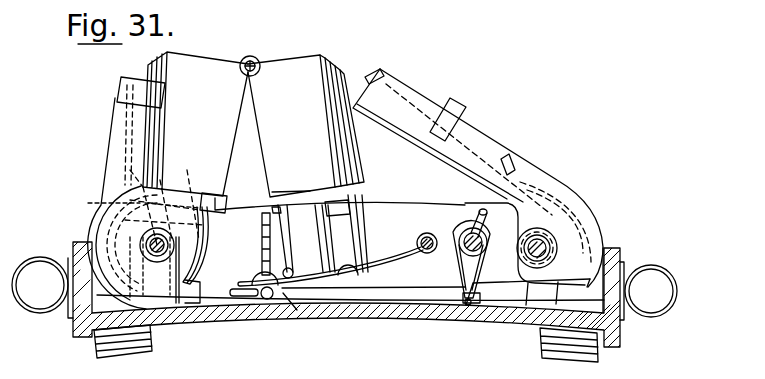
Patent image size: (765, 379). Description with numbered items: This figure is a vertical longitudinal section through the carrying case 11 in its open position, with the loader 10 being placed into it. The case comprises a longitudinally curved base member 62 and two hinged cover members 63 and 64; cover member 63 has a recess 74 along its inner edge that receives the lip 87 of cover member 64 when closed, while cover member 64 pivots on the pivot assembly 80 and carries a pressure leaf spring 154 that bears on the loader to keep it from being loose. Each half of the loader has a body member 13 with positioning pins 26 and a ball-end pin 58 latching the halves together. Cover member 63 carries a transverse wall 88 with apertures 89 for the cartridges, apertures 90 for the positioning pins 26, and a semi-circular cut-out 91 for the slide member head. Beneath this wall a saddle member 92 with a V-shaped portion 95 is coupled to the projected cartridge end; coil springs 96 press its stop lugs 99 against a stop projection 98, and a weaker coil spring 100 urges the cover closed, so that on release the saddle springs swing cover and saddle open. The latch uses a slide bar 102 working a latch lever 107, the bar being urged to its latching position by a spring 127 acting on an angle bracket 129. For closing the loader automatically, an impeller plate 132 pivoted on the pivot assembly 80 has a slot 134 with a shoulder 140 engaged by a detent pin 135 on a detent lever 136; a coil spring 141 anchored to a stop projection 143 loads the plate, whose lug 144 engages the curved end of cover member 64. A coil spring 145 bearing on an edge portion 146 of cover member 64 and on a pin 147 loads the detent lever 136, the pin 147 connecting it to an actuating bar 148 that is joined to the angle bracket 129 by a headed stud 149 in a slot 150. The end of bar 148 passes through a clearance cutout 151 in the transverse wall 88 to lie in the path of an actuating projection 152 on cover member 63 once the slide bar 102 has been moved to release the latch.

The loader 10 is at (233, 48).
The carrying case 11 is at (47, 342).
The semi-cylindrical body member 13 is at (270, 143).
The positioning pins 26 is at (182, 173).
The ball-end pin 58 is at (265, 176).
The base member 62 is at (333, 315).
The cover member 63 is at (86, 157).
The cover member 64 is at (503, 123).
The recess 74 is at (118, 80).
The pivot assembly 80 is at (565, 233).
The lip 87 is at (368, 75).
The transverse wall 88 is at (150, 186).
The apertures 89 is at (162, 183).
The apertures 90 is at (183, 187).
The semi-circular cut-out 91 is at (207, 192).
The saddle member 92 is at (92, 232).
The V-shaped portion 95 is at (212, 228).
The coil springs 96 is at (200, 270).
The stop projection 98 is at (193, 303).
The stop lugs 99 is at (197, 328).
The coil spring 100 is at (122, 298).
The slide bar 102 is at (270, 300).
The latch lever 107 is at (253, 242).
The spring 127 is at (400, 254).
The angle bracket 129 is at (287, 262).
The impeller plate 132 is at (518, 320).
The slot 134 is at (465, 205).
The detent pin 135 is at (455, 262).
The detent lever 136 is at (482, 263).
The shoulder 140 is at (454, 233).
The coil spring 141 is at (561, 296).
The stop projection 143 is at (615, 317).
The lug 144 is at (645, 286).
The coil spring 145 is at (455, 276).
The edge portion 146 is at (528, 294).
The pin 147 is at (452, 313).
The actuating bar 148 is at (354, 297).
The headed stud 149 is at (286, 303).
The slot 150 is at (243, 300).
The clearance cutout 151 is at (222, 197).
The actuating projection 152 is at (190, 313).
The pressure leaf spring 154 is at (473, 120).